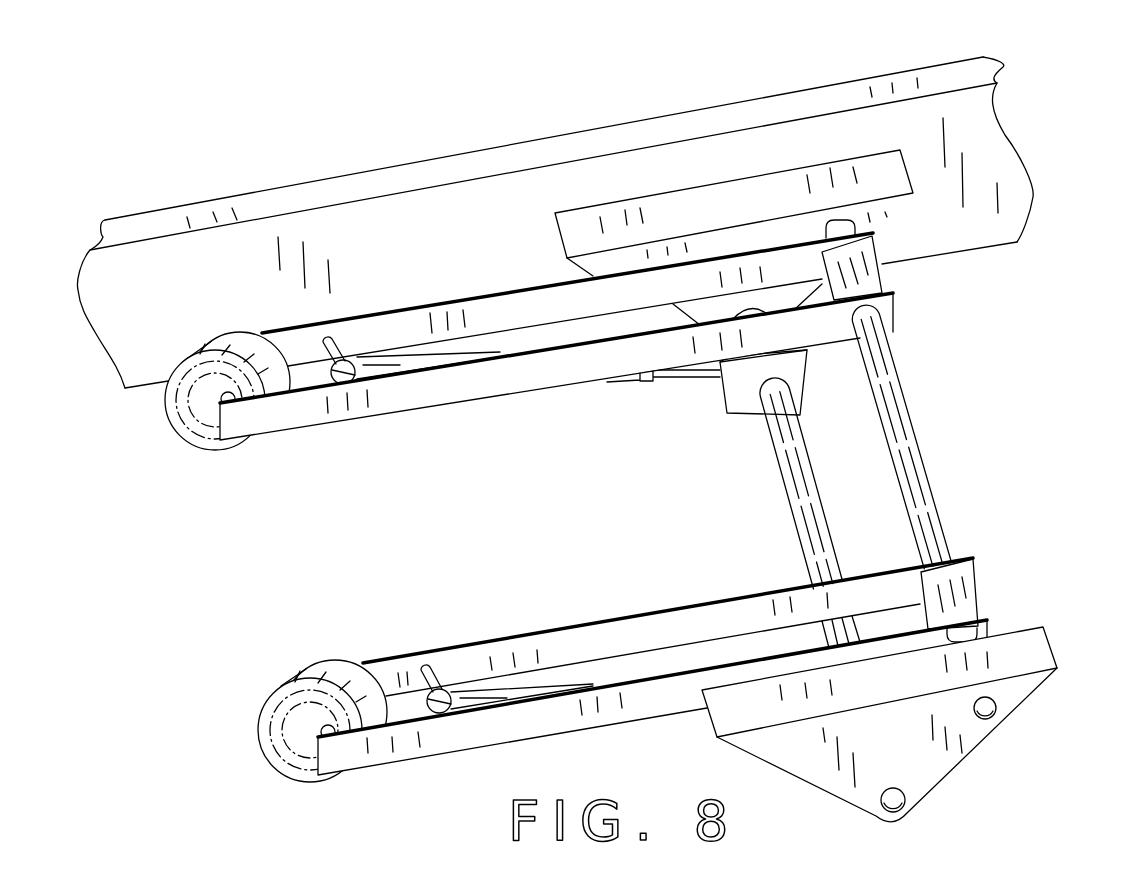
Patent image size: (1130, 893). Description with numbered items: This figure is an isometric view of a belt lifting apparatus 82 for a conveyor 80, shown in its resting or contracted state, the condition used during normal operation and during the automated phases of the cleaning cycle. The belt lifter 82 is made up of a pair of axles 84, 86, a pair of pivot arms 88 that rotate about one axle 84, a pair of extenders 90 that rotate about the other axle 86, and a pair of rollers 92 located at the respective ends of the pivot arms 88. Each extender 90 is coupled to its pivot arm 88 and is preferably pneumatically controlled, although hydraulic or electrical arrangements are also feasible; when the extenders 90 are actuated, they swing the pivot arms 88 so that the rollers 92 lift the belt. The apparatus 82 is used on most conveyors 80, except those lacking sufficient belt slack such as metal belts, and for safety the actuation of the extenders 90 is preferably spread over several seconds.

The conveyor 80 is at (980, 176).
The belt lifting apparatus 82 is at (992, 380).
The axle 84 is at (932, 487).
The axle 86 is at (789, 503).
The pivot arm 88 is at (433, 410).
The extender 90 is at (638, 382).
The roller 92 is at (183, 438).